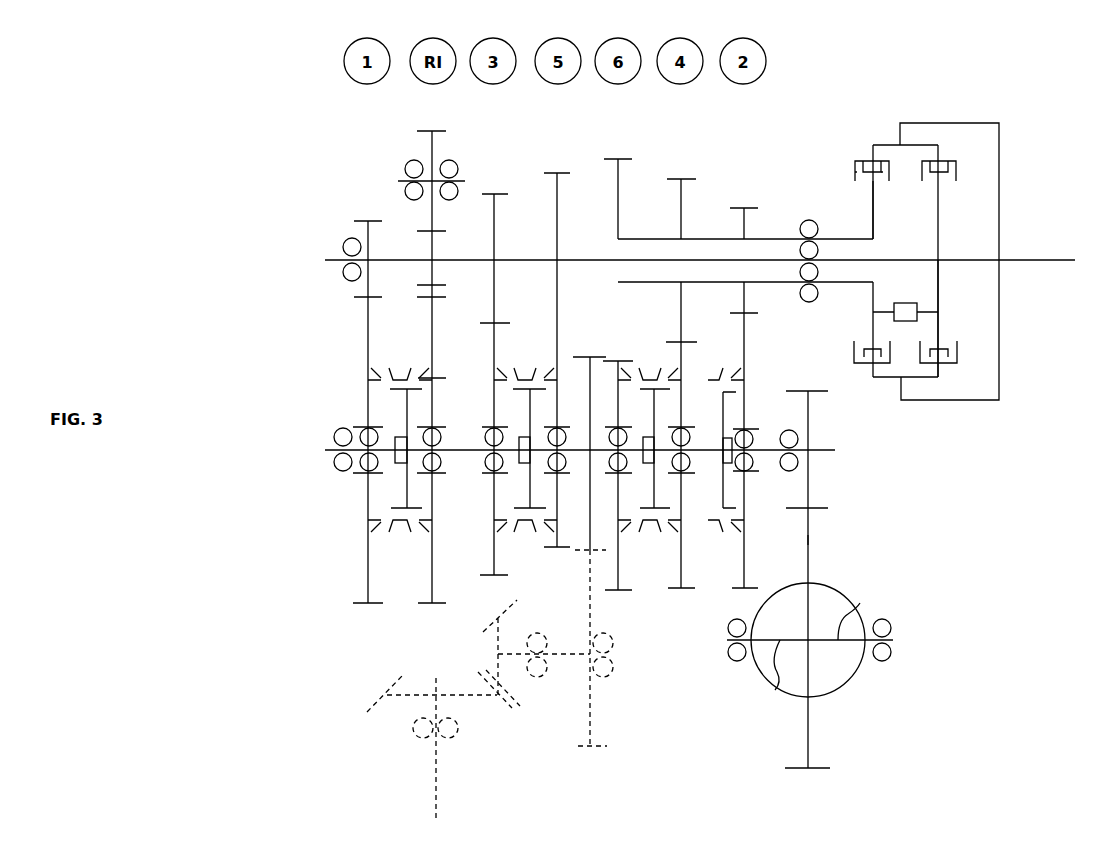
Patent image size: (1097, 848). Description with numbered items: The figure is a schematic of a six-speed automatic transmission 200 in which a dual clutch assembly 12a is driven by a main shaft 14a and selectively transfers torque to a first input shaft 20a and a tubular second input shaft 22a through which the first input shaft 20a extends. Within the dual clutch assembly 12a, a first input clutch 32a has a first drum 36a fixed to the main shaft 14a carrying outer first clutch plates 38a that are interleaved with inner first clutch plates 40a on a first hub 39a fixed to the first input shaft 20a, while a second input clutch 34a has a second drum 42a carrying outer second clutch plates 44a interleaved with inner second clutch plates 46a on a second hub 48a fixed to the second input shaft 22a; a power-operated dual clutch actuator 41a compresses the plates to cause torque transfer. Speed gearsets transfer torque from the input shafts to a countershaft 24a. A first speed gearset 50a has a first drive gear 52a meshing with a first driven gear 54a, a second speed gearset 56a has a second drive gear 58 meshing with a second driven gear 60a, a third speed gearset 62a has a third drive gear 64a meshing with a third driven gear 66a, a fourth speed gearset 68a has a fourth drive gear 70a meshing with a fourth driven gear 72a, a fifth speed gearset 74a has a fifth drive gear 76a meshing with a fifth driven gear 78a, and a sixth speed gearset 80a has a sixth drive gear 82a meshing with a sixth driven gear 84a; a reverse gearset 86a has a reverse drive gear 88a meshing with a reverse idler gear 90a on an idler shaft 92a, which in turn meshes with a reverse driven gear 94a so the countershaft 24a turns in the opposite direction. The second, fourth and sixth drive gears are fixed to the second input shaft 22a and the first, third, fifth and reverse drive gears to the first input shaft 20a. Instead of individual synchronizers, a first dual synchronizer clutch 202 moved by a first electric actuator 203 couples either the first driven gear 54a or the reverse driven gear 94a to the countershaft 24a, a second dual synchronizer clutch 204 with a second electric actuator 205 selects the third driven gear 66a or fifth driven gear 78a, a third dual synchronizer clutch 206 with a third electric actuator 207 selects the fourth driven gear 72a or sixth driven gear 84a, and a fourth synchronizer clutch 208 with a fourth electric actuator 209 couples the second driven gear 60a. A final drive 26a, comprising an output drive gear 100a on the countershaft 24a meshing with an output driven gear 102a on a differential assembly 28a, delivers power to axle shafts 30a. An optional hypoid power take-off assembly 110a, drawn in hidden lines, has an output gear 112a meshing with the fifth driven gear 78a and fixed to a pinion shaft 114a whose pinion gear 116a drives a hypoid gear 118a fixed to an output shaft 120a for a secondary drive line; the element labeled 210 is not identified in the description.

The six-speed automatic transmission 200 is at (172, 88).
The dual clutch assembly 12a is at (916, 219).
The main shaft 14a is at (1028, 262).
The first input shaft 20a is at (925, 258).
The second input shaft 22a is at (843, 238).
The countershaft 24a is at (588, 452).
The final drive 26a is at (830, 498).
The differential assembly 28a is at (866, 697).
The axle shafts 30a is at (842, 606).
The first input clutch 32a is at (975, 162).
The second input clutch 34a is at (862, 150).
The first drum 36a is at (945, 162).
The outer first clutch plates 38a is at (955, 182).
The first hub 39a is at (940, 241).
The inner first clutch plates 40a is at (930, 180).
The power-operated dual clutch actuator 41a is at (912, 289).
The second drum 42a is at (864, 160).
The outer second clutch plates 44a is at (855, 172).
The inner second clutch plates 46a is at (881, 176).
The second hub 48a is at (873, 195).
The first speed gearset 50a is at (320, 160).
The first drive gear 52a is at (354, 294).
The first driven gear 54a is at (368, 333).
The second speed gearset 56a is at (744, 195).
The second drive gear 58 is at (744, 224).
The second driven gear 60a is at (744, 330).
The third speed gearset 62a is at (494, 180).
The third drive gear 64a is at (494, 225).
The third driven gear 66a is at (494, 345).
The fourth speed gearset 68a is at (681, 172).
The fourth drive gear 70a is at (681, 213).
The fourth driven gear 72a is at (681, 316).
The fifth speed gearset 74a is at (557, 165).
The fifth drive gear 76a is at (557, 190).
The fifth driven gear 78a is at (557, 355).
The sixth speed gearset 80a is at (618, 157).
The sixth drive gear 82a is at (640, 182).
The sixth driven gear 84a is at (612, 418).
The reverse gearset 86a is at (425, 128).
The reverse drive gear 88a is at (432, 250).
The reverse idler gear 90a is at (432, 147).
The idler shaft 92a is at (398, 183).
The reverse driven gear 94a is at (432, 330).
The output drive gear 100a is at (810, 408).
The output driven gear 102a is at (810, 540).
The hypoid power take-off assembly 110a is at (315, 652).
The output gear 112a is at (592, 615).
The pinion shaft 114a is at (615, 658).
The pinion gear 116a is at (492, 622).
The hypoid gear 118a is at (380, 693).
The output shaft 120a is at (436, 776).
The first dual synchronizer clutch 202 is at (401, 538).
The first electric actuator 203 is at (400, 437).
The second dual synchronizer clutch 204 is at (527, 538).
The second electric actuator 205 is at (523, 437).
The third dual synchronizer clutch 206 is at (651, 538).
The third electric actuator 207 is at (647, 437).
The fourth synchronizer clutch 208 is at (726, 538).
The fourth electric actuator 209 is at (722, 438).
The sixth gear driven gear hub 210 is at (596, 357).